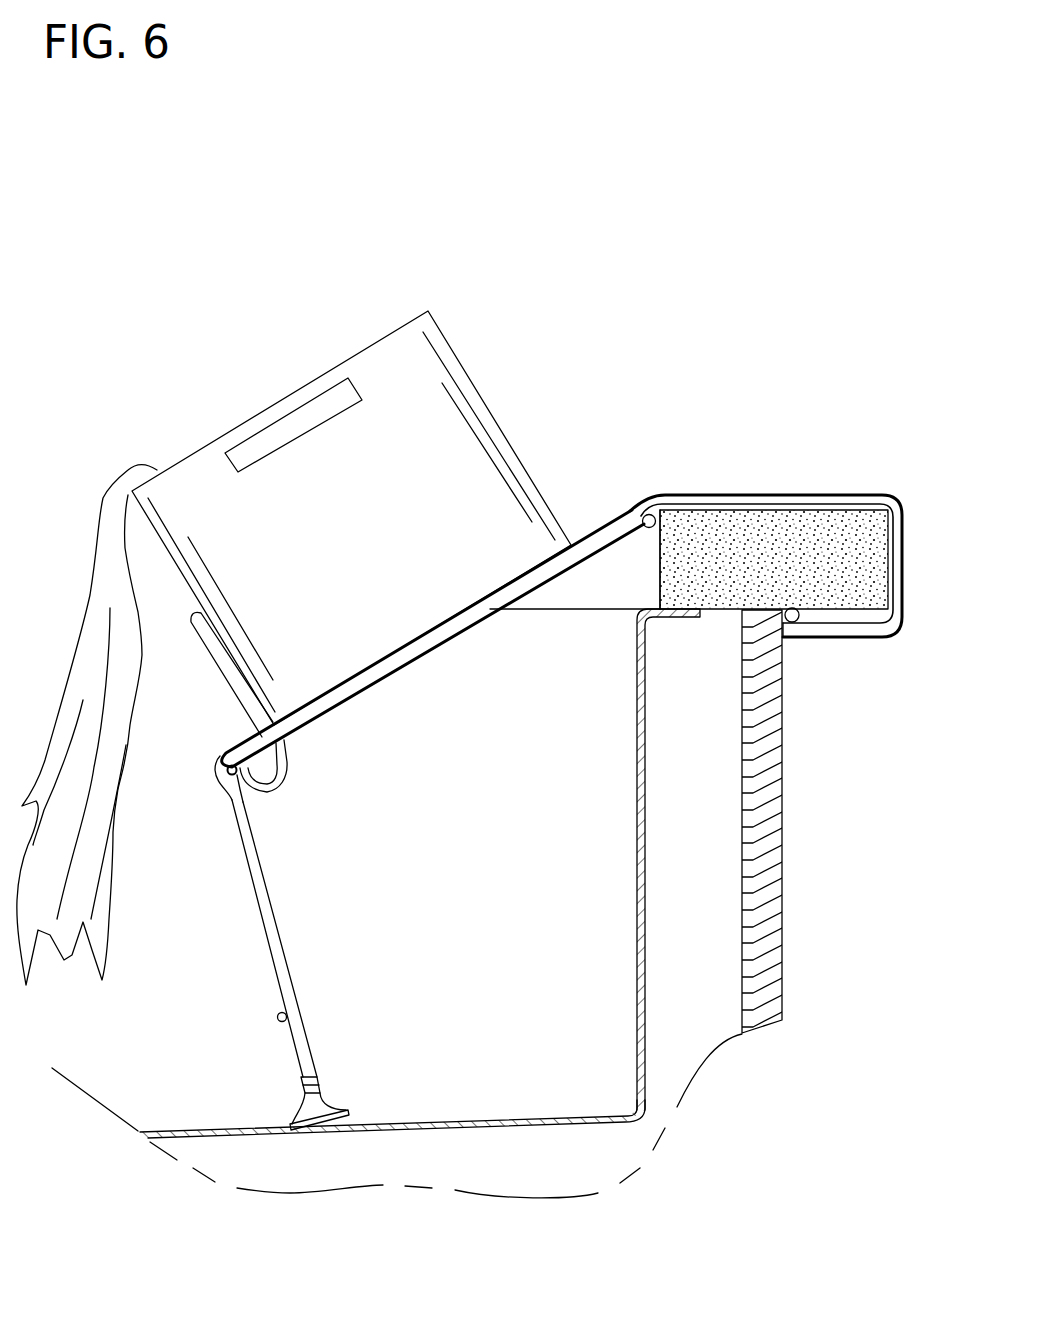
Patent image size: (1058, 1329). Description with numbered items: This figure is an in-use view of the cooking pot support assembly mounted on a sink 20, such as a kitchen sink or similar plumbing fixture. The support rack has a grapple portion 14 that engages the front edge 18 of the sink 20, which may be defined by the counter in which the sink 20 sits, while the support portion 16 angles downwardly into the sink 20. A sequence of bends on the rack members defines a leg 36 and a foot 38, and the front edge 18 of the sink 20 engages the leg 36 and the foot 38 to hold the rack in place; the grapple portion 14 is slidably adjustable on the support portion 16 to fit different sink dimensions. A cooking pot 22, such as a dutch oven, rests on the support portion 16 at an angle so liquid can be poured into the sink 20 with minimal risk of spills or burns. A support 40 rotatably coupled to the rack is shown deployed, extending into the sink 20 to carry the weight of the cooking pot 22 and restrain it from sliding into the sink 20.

The grapple portion 14 is at (906, 480).
The support portion 16 is at (596, 510).
The front edge 18 is at (893, 497).
The sink 20 is at (637, 650).
The cooking pot 22 is at (482, 397).
The leg 36 is at (906, 566).
The foot 38 is at (836, 648).
The support 40 is at (250, 928).